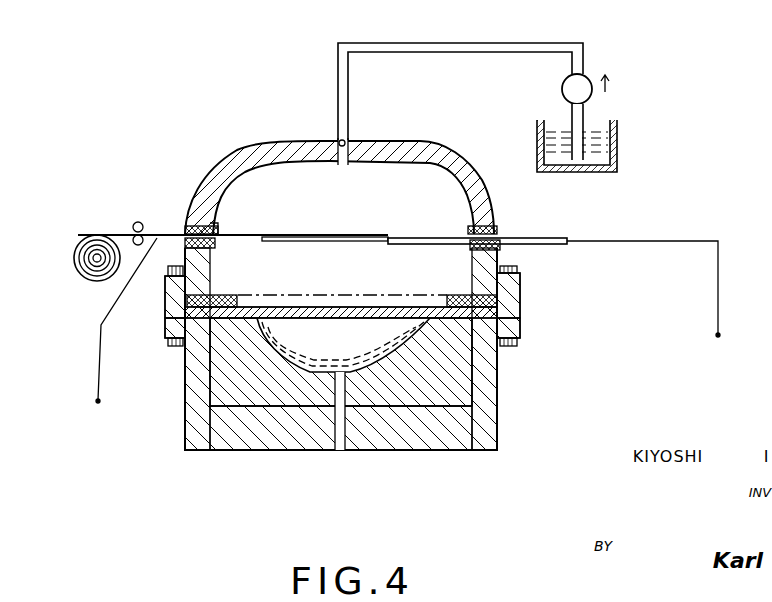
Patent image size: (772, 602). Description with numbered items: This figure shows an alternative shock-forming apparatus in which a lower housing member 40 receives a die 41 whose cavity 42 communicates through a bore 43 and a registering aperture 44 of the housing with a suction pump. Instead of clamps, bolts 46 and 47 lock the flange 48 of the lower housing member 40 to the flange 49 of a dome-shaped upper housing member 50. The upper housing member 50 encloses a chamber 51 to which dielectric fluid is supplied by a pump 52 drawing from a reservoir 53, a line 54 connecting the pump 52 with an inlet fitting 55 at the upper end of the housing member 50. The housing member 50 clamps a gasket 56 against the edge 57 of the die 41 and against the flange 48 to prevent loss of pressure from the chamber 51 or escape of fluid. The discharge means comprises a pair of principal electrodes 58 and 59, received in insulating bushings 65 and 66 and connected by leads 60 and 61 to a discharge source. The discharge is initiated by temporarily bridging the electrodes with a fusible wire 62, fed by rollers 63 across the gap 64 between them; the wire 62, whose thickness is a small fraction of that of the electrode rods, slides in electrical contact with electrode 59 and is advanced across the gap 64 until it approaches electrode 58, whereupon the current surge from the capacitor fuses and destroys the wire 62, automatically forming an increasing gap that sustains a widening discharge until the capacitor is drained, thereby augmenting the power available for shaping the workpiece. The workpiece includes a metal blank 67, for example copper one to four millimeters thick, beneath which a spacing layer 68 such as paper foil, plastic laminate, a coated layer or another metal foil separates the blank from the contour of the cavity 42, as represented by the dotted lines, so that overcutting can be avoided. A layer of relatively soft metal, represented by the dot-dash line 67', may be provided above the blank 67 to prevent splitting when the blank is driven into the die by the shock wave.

The lower housing member 40 is at (196, 451).
The die 41 is at (265, 395).
The cavity 42 is at (392, 350).
The bore 43 is at (335, 396).
The registering aperture 44 is at (345, 434).
The bolt 46 is at (519, 269).
The bolt 47 is at (176, 347).
The flange of lower housing member 48 is at (519, 343).
The flange of upper housing member 49 is at (512, 310).
The upper housing member 50 is at (339, 157).
The chamber 51 is at (433, 184).
The pump 52 is at (561, 85).
The reservoir 53 is at (619, 148).
The line 54 is at (460, 44).
The inlet fitting 55 is at (350, 140).
The gasket 56 is at (184, 290).
The edge of die 57 is at (228, 330).
The principal electrode 58 is at (406, 239).
The principal electrode 59 is at (268, 237).
The lead 60 is at (645, 243).
The lead 61 is at (209, 319).
The fusible wire 62 is at (143, 233).
The rollers 63 is at (133, 223).
The gap 64 is at (372, 243).
The insulating bushing 65 is at (186, 225).
The insulating bushing 66 is at (500, 232).
The metal blank 67 is at (342, 278).
The layer of relatively soft metal 67' is at (272, 275).
The spacing layer 68 is at (326, 318).